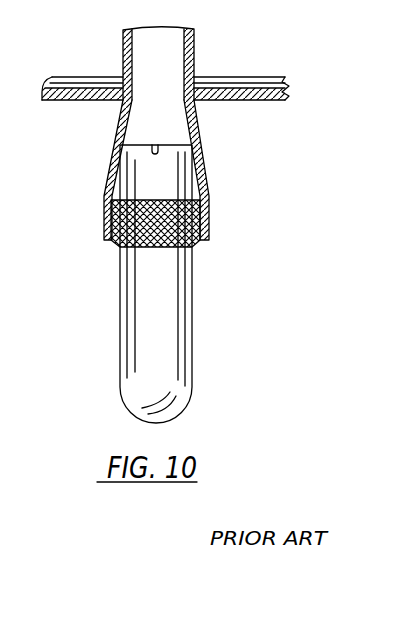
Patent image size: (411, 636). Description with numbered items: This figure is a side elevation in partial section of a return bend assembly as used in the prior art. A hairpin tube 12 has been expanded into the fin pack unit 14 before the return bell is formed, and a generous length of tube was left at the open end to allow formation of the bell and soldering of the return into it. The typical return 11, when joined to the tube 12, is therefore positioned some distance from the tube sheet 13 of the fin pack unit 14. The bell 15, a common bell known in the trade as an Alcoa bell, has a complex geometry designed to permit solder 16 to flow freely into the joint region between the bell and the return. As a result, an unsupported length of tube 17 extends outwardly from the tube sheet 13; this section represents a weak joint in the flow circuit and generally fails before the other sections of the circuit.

The return 11 is at (193, 340).
The tube 12 is at (122, 53).
The tube sheet 13 is at (258, 100).
The fin pack unit 14 is at (212, 59).
The bell 15 is at (218, 202).
The solder 16 is at (193, 249).
The unsupported length of tube 17 is at (113, 129).